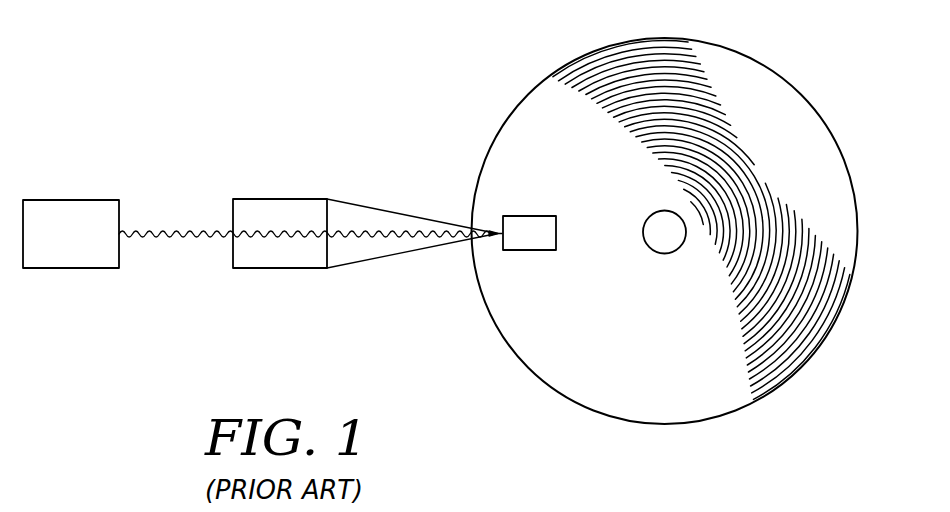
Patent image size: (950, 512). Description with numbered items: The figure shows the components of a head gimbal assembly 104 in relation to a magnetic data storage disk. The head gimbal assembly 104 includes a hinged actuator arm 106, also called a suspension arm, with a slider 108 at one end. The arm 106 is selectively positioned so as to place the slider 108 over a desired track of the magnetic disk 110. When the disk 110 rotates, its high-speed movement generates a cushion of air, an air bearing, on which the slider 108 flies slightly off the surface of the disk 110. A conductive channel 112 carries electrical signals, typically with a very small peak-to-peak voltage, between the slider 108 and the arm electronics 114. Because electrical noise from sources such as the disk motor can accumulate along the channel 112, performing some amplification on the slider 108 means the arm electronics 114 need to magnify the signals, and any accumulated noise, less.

The head gimbal assembly 104 is at (227, 112).
The hinged actuator arm 106 is at (383, 207).
The slider 108 is at (530, 215).
The magnetic disk 110 is at (538, 85).
The conductive channel 112 is at (190, 229).
The arm electronics 114 is at (72, 199).